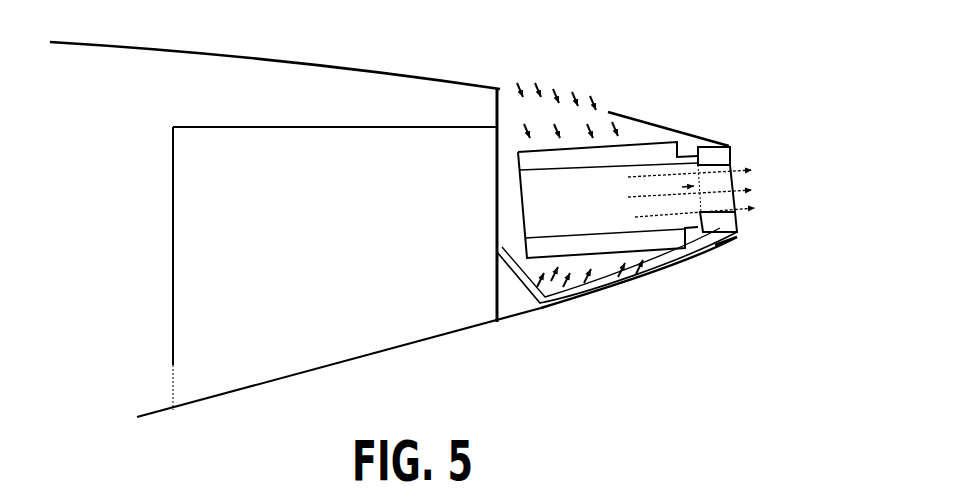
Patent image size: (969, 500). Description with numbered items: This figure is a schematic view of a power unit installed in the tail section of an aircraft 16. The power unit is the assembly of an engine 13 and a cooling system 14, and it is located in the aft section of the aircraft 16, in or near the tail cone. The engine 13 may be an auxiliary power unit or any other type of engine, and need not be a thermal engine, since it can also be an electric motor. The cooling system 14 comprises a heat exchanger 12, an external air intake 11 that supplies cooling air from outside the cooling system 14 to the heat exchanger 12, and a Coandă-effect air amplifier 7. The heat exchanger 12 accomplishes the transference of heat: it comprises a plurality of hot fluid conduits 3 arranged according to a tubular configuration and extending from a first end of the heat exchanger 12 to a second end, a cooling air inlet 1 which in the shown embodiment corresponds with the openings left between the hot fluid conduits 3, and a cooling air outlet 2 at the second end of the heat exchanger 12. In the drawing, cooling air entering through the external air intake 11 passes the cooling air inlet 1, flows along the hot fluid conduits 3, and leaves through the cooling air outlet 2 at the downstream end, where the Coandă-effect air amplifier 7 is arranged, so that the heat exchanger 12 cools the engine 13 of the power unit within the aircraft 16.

The cooling air inlet 1 is at (604, 141).
The cooling air outlet 2 is at (756, 169).
The hot fluid conduits 3 is at (657, 245).
The Coandă-effect air amplifier 7 is at (725, 242).
The external air intake 11 is at (556, 97).
The heat exchanger 12 is at (656, 131).
The engine 13 is at (280, 340).
The cooling system 14 is at (740, 97).
The aircraft 16 is at (356, 51).